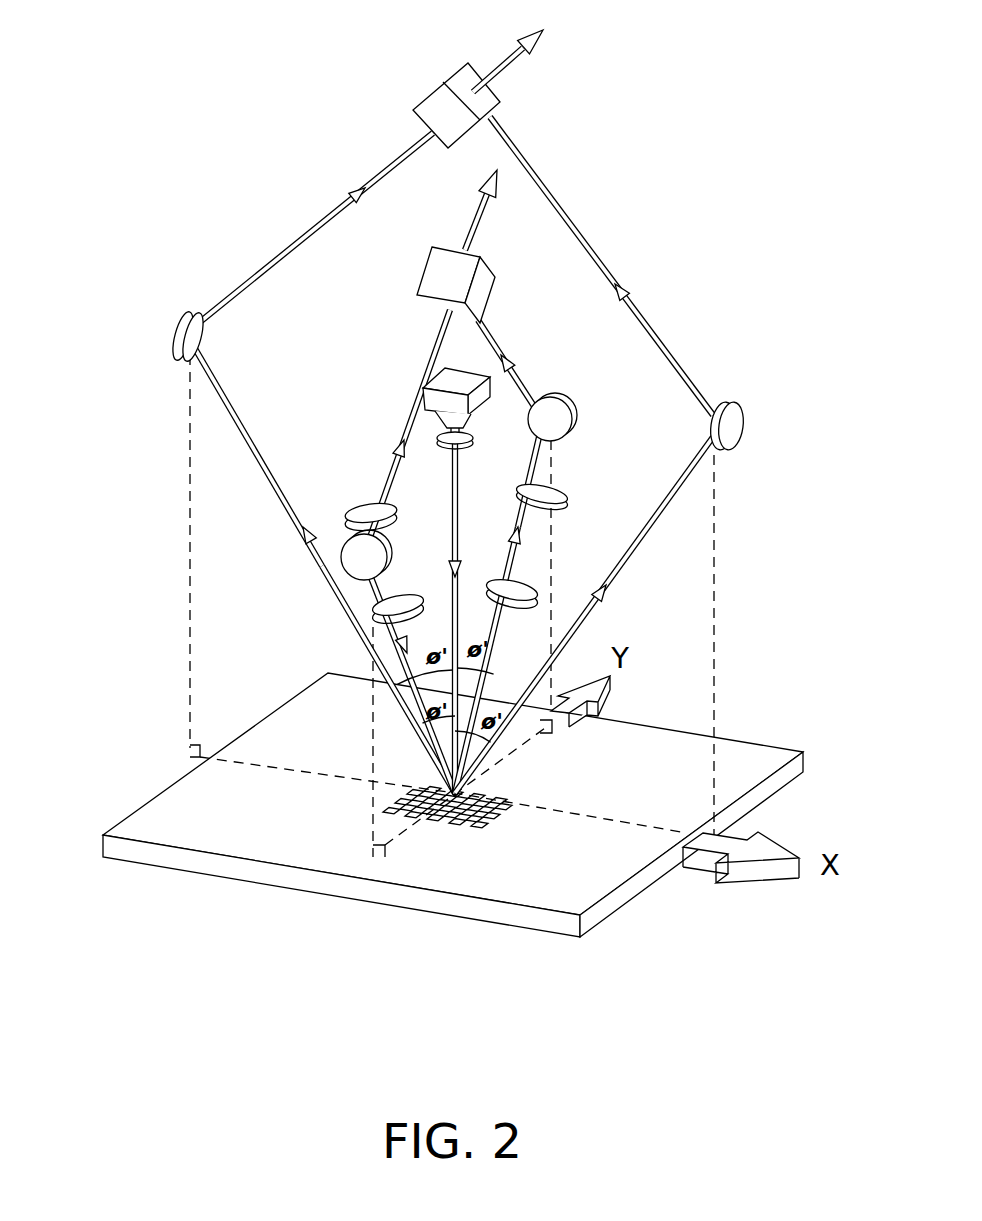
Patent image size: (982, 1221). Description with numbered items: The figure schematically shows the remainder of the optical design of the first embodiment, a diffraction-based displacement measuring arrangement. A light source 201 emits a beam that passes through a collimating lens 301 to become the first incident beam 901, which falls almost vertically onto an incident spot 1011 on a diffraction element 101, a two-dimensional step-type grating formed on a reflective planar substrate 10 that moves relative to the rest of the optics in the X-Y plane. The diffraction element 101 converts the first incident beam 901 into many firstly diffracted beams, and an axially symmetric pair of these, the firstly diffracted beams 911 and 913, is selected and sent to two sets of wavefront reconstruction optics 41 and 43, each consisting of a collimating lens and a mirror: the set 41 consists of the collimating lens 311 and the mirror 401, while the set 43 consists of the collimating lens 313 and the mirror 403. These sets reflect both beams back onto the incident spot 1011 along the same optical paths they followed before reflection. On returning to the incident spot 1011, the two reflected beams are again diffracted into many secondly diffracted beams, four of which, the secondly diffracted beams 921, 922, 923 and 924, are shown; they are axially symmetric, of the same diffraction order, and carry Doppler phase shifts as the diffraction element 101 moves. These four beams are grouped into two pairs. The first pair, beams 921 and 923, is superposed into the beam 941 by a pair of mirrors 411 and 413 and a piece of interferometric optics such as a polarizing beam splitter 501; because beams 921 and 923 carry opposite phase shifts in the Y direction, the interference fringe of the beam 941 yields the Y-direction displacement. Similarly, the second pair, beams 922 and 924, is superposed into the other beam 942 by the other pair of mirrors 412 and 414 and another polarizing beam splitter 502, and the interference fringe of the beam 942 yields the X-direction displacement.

The reflective planar substrate 10 is at (453, 805).
The diffraction element 101 is at (532, 799).
The incident spot 1011 is at (453, 830).
The light source 201 is at (438, 378).
The collimating lens 301 is at (433, 412).
The collimating lens 311 is at (540, 593).
The collimating lens 313 is at (418, 598).
The mirror 401 is at (547, 484).
The mirror 403 is at (362, 513).
The wavefront reconstruction optics 41 is at (579, 532).
The wavefront reconstruction optics 43 is at (346, 511).
The mirror 411 is at (733, 428).
The mirror 412 is at (567, 425).
The mirror 413 is at (180, 312).
The mirror 414 is at (355, 567).
The polarizing beam splitter 501 is at (502, 103).
The polarizing beam splitter 502 is at (485, 287).
The first incident beam 901 is at (458, 490).
The firstly diffracted beam 911 is at (513, 547).
The firstly diffracted beam 913 is at (373, 603).
The secondly diffracted beam 921 is at (657, 510).
The secondly diffracted beam 922 is at (550, 452).
The secondly diffracted beam 923 is at (223, 387).
The secondly diffracted beam 924 is at (380, 657).
The superposed beam 941 is at (503, 75).
The superposed beam 942 is at (475, 228).